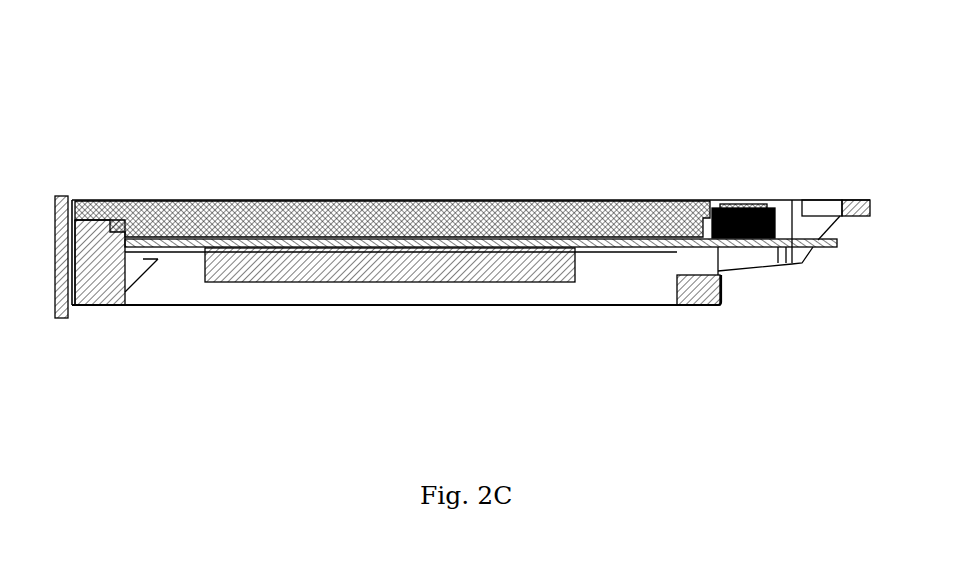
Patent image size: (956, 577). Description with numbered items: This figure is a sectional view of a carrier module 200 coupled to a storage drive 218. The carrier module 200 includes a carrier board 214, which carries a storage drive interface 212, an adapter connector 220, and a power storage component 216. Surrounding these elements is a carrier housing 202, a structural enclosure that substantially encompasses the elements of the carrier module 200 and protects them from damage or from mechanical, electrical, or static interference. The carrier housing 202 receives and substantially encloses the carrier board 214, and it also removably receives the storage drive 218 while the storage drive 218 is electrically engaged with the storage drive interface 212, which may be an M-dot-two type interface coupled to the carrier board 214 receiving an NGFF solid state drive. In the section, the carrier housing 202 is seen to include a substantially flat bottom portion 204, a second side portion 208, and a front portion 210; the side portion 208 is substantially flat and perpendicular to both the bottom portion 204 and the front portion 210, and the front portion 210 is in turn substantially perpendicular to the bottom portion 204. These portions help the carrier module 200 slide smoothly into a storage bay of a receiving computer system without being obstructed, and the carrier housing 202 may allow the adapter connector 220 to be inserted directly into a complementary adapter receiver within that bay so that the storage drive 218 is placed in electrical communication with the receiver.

The carrier module 200 is at (203, 82).
The carrier housing 202 is at (590, 337).
The bottom portion 204 is at (360, 312).
The second side portion 208 is at (443, 293).
The front portion 210 is at (50, 233).
The storage drive interface 212 is at (772, 200).
The carrier board 214 is at (617, 240).
The power storage component 216 is at (262, 266).
The storage drive 218 is at (450, 218).
The adapter connector 220 is at (821, 248).